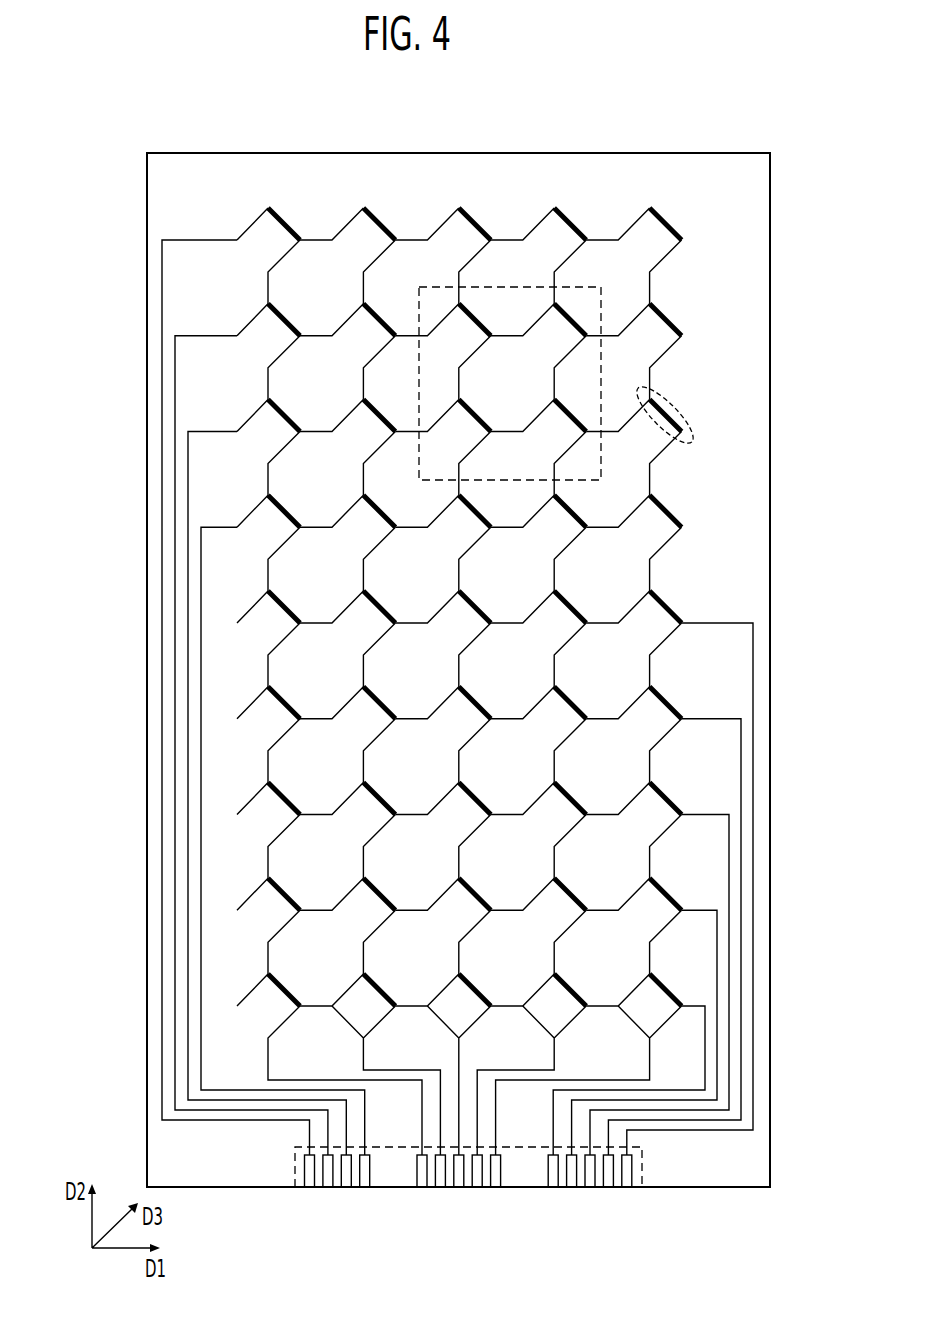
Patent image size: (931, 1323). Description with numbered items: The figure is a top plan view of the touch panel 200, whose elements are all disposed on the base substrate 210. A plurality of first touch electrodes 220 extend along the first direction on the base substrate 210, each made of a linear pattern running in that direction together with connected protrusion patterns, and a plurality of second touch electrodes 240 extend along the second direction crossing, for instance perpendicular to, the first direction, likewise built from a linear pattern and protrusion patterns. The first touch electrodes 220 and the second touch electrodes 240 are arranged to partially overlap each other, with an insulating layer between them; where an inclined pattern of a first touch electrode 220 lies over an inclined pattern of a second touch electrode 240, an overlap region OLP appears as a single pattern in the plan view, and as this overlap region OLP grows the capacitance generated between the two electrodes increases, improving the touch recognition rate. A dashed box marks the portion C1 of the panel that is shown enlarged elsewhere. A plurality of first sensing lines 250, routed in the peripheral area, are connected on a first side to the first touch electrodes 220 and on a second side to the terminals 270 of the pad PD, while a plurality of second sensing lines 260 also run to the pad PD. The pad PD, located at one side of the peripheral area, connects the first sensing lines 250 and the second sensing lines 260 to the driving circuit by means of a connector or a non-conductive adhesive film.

The touch panel 200 is at (540, 137).
The base substrate 210 is at (675, 168).
The first touch electrodes 220 is at (322, 239).
The second touch electrodes 240 is at (652, 283).
The first sensing lines 250 is at (161, 298).
The second sensing lines 260 is at (418, 1132).
The terminals 270 is at (496, 1188).
The pad PD is at (642, 1168).
The portion C1 is at (500, 286).
The overlap region OLP is at (692, 402).